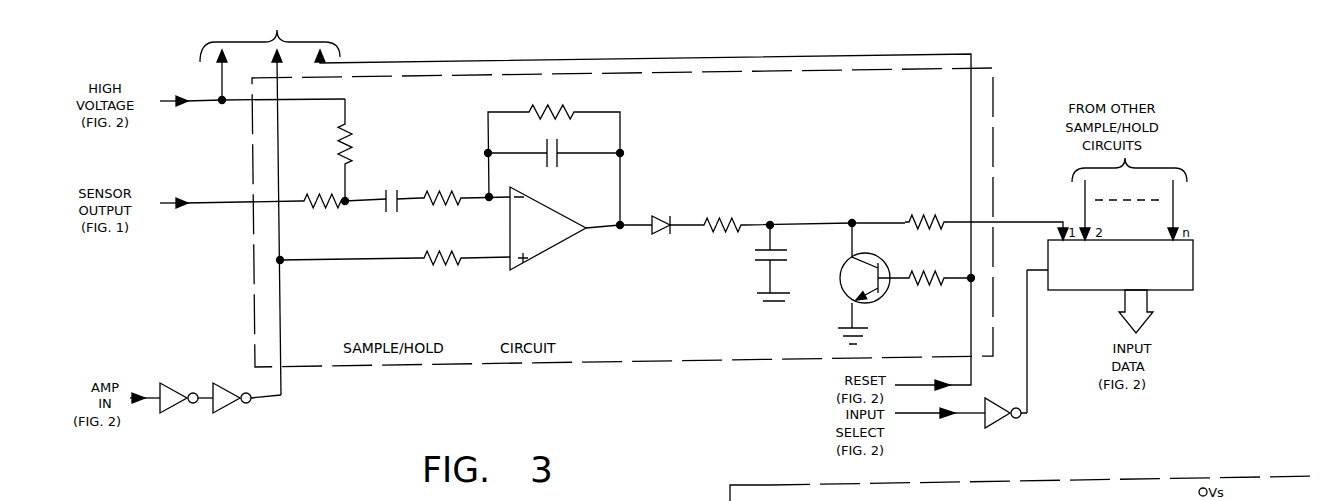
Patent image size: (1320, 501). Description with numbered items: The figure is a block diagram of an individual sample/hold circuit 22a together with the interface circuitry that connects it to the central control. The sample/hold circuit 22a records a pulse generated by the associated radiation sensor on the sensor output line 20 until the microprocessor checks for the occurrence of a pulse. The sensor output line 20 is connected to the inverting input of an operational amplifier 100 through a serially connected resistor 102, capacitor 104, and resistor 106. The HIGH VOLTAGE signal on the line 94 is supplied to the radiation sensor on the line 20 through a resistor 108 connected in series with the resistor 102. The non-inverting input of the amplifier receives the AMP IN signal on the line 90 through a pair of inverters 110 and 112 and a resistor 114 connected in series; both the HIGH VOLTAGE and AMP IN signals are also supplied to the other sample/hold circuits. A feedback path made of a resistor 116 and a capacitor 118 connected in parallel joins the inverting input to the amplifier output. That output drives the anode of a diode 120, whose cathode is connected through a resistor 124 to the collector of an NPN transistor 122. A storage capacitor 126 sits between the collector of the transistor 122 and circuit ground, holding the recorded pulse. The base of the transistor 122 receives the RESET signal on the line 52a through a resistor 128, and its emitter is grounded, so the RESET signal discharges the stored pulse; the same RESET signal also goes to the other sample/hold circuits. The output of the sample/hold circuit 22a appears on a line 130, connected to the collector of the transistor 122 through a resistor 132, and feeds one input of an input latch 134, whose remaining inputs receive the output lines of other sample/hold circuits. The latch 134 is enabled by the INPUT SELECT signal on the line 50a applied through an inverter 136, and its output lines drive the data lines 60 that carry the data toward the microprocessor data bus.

The high voltage line 94 is at (169, 100).
The sensor output line 20 is at (226, 203).
The resistor 102 is at (324, 217).
The resistor 108 is at (351, 150).
The capacitor 104 is at (385, 195).
The resistor 106 is at (453, 196).
The operational amplifier 100 is at (532, 235).
The resistor 116 is at (536, 110).
The capacitor 118 is at (558, 158).
The resistor 114 is at (440, 268).
The diode 120 is at (664, 234).
The resistor 124 is at (702, 228).
The storage capacitor 126 is at (760, 262).
The NPN transistor 122 is at (882, 297).
The resistor 128 is at (945, 272).
The resistor 132 is at (936, 218).
The output line 130 is at (1023, 221).
The input latch 134 is at (1194, 270).
The data lines 60 is at (1150, 313).
The inverter 136 is at (1022, 425).
The input select line 50a is at (978, 414).
The reset signal line 52a is at (971, 320).
The AMP IN line 90 is at (158, 396).
The inverter 110 is at (182, 411).
The inverter 112 is at (240, 411).
The sample/hold circuit 22a is at (537, 378).